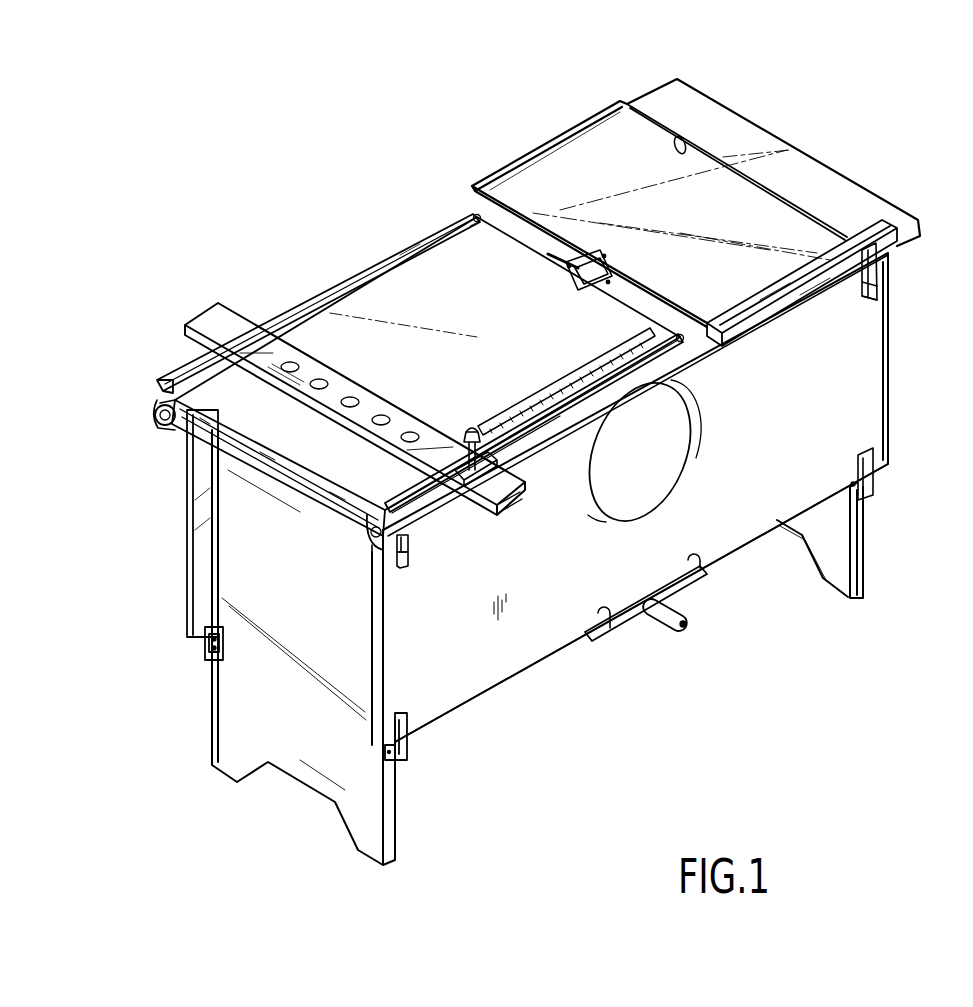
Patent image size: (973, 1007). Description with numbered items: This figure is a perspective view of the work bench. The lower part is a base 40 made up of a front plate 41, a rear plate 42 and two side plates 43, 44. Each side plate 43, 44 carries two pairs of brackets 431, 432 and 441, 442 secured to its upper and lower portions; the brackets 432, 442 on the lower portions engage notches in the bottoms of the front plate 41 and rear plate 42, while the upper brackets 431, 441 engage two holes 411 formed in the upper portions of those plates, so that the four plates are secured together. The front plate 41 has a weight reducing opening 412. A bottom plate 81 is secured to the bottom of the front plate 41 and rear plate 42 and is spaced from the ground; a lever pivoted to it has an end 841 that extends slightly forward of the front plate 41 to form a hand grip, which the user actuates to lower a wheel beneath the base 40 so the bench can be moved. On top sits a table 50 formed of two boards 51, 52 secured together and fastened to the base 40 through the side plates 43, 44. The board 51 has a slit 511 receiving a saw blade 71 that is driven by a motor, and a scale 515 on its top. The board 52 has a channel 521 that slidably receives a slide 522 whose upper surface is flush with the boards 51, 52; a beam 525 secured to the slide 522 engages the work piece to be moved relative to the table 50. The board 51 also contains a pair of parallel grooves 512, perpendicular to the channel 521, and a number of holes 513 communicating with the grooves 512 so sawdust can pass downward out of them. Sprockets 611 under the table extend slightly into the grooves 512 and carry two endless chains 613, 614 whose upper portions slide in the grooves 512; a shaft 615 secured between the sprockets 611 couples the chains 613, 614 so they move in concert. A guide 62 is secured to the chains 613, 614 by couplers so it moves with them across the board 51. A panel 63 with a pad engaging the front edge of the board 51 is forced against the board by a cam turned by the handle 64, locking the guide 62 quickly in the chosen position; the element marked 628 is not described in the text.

The base 40 is at (540, 690).
The front plate 41 is at (742, 530).
The holes 411 is at (872, 292).
The weight reducing opening 412 is at (665, 452).
The rear plate 42 is at (205, 535).
The side plate 43 is at (225, 708).
The brackets 431 is at (410, 545).
The brackets 432 is at (205, 650).
The side plate 44 is at (858, 548).
The brackets 441 is at (878, 268).
The brackets 442 is at (873, 472).
The table 50 is at (532, 140).
The board 51 is at (288, 478).
The slit 511 is at (558, 258).
The grooves 512 is at (446, 232).
The holes 513 is at (400, 262).
The scale 515 is at (540, 396).
The board 52 is at (782, 160).
The channel 521 is at (688, 148).
The slide 522 is at (593, 135).
The beam 525 is at (878, 230).
The guide 62 is at (212, 318).
The sprockets 611 is at (160, 405).
The endless chain 613 is at (378, 570).
The endless chain 614 is at (168, 440).
The shaft 615 is at (318, 505).
The fence end 628 is at (508, 510).
The panel 63 is at (470, 490).
The handle 64 is at (470, 428).
The saw blade 71 is at (585, 287).
The bottom plate 81 is at (700, 580).
The lever end 841 is at (670, 622).